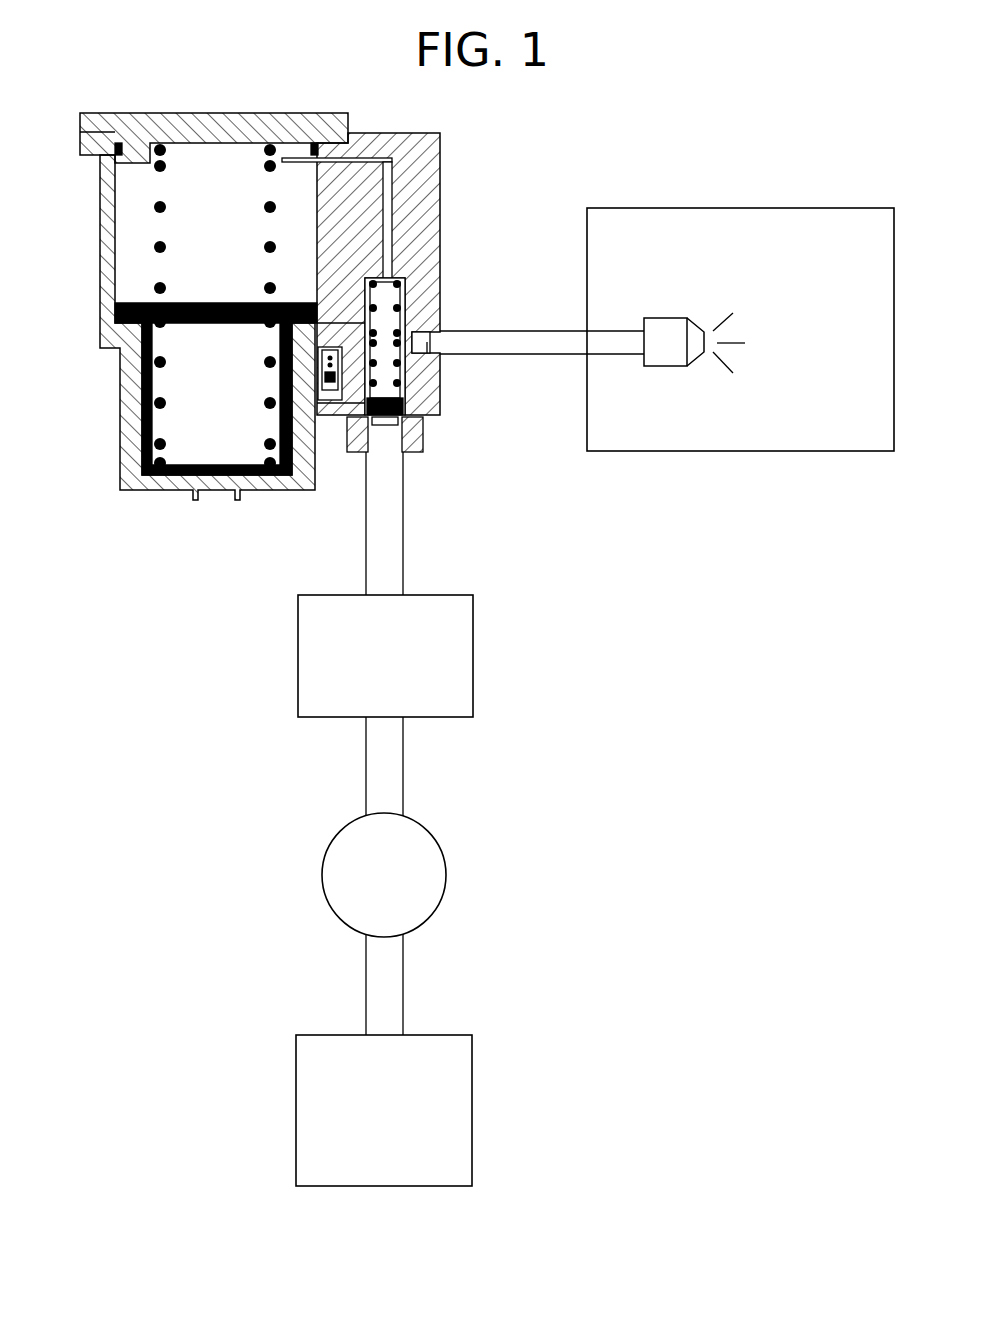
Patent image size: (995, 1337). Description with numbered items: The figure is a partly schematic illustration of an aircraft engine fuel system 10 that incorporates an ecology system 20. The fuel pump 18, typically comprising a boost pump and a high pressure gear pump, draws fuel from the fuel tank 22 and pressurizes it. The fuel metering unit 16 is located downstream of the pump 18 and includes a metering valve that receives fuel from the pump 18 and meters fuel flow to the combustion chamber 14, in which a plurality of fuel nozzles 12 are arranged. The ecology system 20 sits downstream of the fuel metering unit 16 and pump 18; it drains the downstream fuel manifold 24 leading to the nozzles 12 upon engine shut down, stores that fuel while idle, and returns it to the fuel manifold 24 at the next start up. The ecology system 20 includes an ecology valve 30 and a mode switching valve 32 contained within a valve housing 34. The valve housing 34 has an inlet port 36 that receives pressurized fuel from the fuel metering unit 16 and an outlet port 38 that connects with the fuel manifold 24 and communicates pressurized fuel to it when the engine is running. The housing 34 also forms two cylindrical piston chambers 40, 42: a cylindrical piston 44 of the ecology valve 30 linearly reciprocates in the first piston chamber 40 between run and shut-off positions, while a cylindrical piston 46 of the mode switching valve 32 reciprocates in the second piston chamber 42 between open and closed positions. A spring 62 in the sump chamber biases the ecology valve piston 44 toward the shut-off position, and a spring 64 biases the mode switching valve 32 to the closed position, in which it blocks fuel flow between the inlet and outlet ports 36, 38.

The engine fuel system 10 is at (692, 978).
The fuel nozzle 12 is at (676, 330).
The combustion chamber 14 is at (791, 223).
The fuel metering unit 16 is at (463, 657).
The fuel pump 18 is at (437, 884).
The ecology system 20 is at (303, 96).
The fuel tank 22 is at (465, 1110).
The fuel manifold 24 is at (553, 332).
The ecology valve 30 is at (213, 157).
The mode switching valve 32 is at (385, 293).
The valve housing 34 is at (385, 135).
The inlet port 36 is at (427, 436).
The outlet port 38 is at (418, 386).
The first piston chamber 40 is at (127, 190).
The second piston chamber 42 is at (398, 294).
The ecology valve piston 44 is at (137, 300).
The mode switching valve piston 46 is at (385, 420).
The spring 62 is at (160, 378).
The spring 64 is at (403, 388).